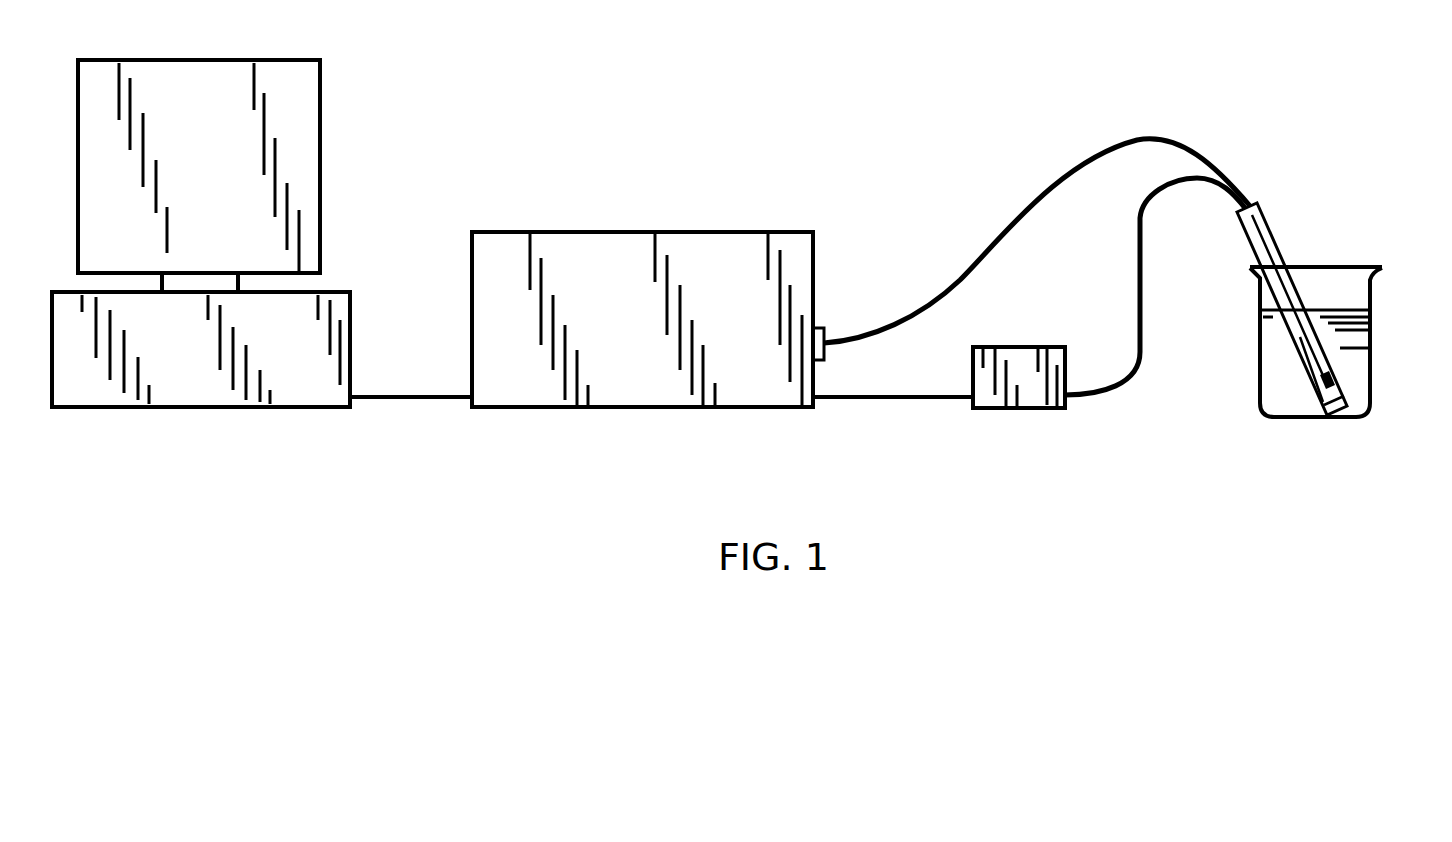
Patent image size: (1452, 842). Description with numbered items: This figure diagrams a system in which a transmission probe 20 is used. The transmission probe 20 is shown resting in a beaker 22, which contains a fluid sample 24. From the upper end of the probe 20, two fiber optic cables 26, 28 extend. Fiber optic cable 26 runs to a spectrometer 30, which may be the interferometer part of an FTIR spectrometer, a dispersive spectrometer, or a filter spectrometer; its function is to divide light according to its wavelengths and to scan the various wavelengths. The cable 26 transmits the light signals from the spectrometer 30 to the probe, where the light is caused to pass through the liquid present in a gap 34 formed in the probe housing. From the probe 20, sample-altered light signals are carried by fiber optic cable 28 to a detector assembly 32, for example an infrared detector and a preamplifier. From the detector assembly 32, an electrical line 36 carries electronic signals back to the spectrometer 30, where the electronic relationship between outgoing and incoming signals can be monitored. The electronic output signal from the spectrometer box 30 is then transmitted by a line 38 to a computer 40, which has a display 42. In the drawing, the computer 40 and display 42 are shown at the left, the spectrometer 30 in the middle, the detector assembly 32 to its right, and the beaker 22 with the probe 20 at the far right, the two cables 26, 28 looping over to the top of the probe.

The transmission probe 20 is at (1340, 271).
The beaker 22 is at (1345, 390).
The fluid sample 24 is at (1342, 348).
The fiber optic cable 26 is at (1017, 212).
The fiber optic cable 28 is at (1110, 384).
The spectrometer 30 is at (648, 420).
The detector assembly 32 is at (1014, 430).
The gap 34 is at (1330, 380).
The electrical line 36 is at (845, 398).
The line 38 is at (374, 400).
The computer 40 is at (180, 425).
The display 42 is at (343, 119).